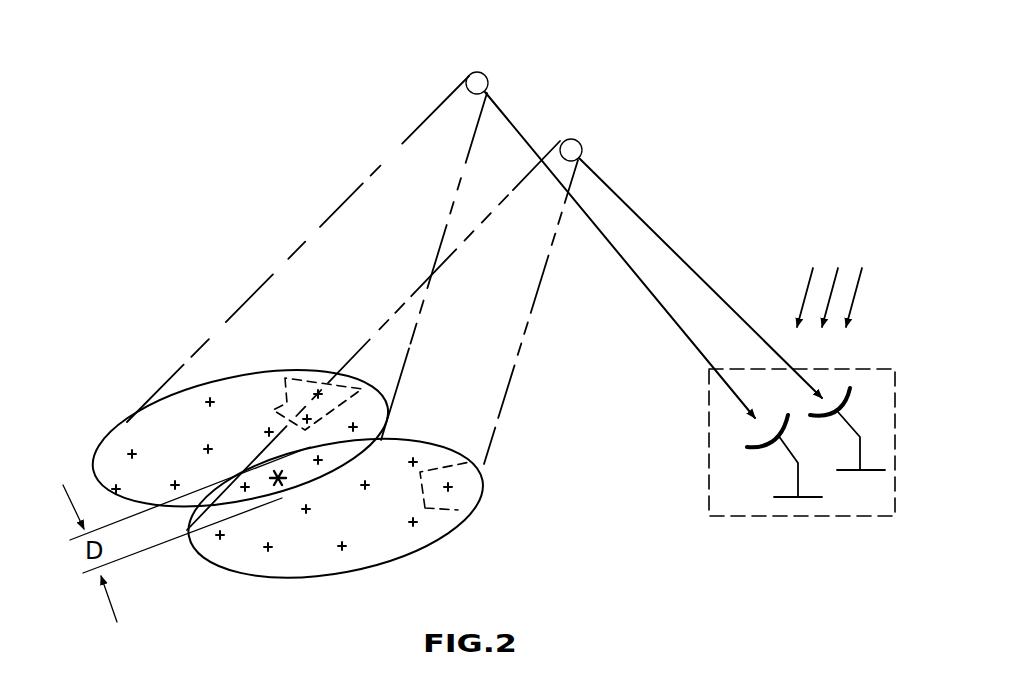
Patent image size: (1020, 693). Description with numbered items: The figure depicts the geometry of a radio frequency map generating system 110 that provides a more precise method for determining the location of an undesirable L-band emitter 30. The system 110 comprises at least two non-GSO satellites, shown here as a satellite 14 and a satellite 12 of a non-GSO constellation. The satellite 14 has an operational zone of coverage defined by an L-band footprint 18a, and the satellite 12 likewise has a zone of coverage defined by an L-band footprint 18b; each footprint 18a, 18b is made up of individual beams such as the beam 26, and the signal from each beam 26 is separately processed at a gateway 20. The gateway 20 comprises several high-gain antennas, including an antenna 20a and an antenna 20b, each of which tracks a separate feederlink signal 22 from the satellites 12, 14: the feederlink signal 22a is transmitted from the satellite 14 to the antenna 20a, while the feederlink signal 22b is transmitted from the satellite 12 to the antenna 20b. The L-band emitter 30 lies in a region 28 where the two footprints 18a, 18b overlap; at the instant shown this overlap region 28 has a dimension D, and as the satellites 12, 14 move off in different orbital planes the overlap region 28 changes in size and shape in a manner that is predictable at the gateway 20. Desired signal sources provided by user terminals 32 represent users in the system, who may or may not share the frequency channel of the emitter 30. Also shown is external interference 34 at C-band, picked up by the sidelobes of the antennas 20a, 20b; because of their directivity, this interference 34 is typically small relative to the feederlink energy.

The system 110 is at (755, 108).
The satellite 14 is at (488, 76).
The satellite 12 is at (582, 141).
The feederlink signal 22 is at (653, 255).
The feederlink signal 22a is at (670, 312).
The feederlink signal 22b is at (672, 247).
The external interference 34 is at (853, 300).
The gateway 20 is at (779, 444).
The antenna 20a is at (793, 478).
The antenna 20b is at (852, 417).
The L-band footprint 18a is at (108, 432).
The L-band footprint 18b is at (420, 552).
The beam 26 is at (285, 378).
The overlap region 28 is at (347, 462).
The L-band emitter 30 is at (281, 486).
The user terminals 32 is at (207, 449).